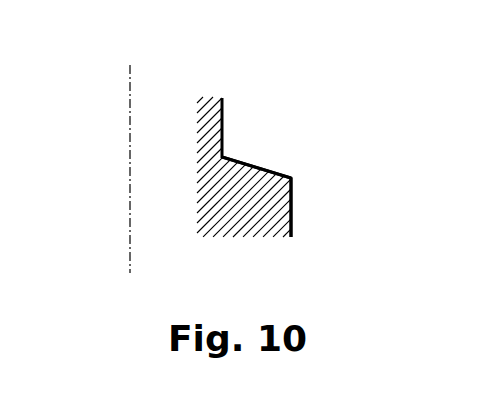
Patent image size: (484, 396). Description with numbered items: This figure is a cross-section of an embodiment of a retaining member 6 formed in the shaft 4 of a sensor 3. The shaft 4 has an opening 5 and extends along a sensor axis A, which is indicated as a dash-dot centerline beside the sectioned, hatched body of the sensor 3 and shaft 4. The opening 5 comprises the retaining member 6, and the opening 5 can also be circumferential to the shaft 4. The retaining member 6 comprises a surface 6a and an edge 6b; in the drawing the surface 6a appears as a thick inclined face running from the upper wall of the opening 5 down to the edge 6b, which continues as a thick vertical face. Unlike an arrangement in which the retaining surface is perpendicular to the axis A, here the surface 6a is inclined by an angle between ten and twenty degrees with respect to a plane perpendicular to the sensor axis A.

The sensor axis A is at (130, 112).
The sensor 3 is at (166, 167).
The shaft 4 is at (200, 168).
The opening 5 is at (268, 123).
The retaining member 6 is at (294, 130).
The surface 6a is at (265, 167).
The edge 6b is at (292, 177).